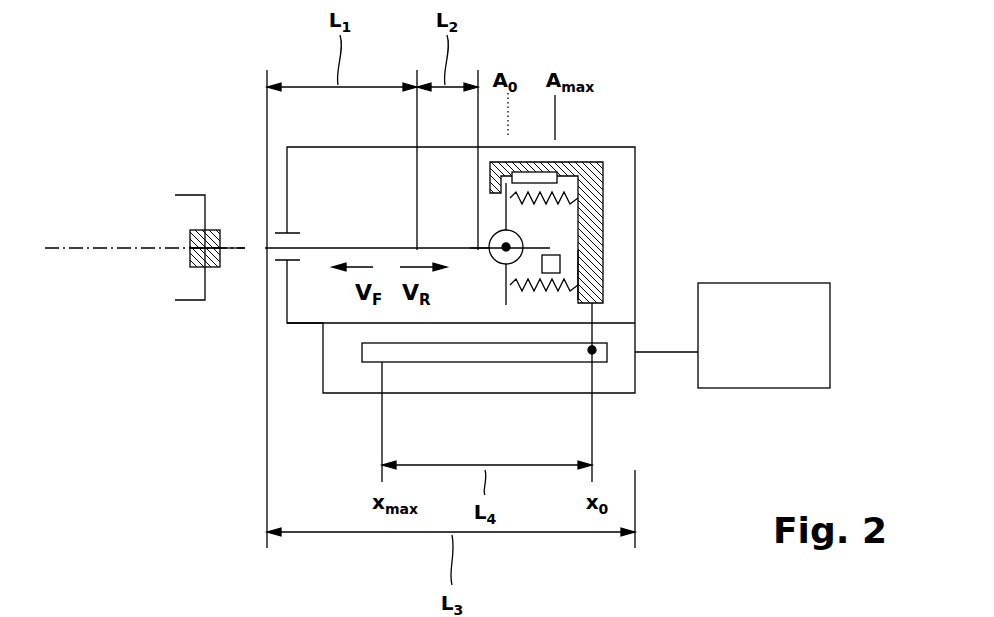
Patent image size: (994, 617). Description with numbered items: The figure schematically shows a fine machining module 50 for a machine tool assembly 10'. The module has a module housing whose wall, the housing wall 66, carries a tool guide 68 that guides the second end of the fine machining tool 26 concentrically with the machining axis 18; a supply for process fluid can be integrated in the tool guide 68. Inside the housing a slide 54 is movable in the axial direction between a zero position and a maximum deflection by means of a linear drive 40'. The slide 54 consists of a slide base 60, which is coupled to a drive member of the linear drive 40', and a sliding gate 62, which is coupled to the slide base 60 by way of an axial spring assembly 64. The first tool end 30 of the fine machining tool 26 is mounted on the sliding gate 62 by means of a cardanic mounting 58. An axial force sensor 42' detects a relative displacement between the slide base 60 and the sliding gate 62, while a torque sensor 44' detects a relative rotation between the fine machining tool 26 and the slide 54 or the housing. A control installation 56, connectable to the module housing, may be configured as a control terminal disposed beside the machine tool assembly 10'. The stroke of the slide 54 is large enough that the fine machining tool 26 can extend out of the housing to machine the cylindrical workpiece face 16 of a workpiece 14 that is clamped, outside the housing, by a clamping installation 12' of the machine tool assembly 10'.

The machine tool assembly 10' is at (72, 65).
The clamping installation 12' is at (193, 206).
The workpiece 14 is at (190, 255).
The cylindrical workpiece face 16 is at (229, 243).
The machining axis 18 is at (105, 246).
The fine machining tool 26 is at (355, 240).
The first tool end 30 is at (468, 268).
The linear drive 40' is at (539, 392).
The axial force sensor 42' is at (588, 139).
The torque sensor 44' is at (629, 244).
The fine machining module 50 is at (792, 128).
The slide 54 is at (616, 193).
The control installation 56 is at (775, 305).
The cardanic mounting 58 is at (492, 273).
The slide base 60 is at (592, 262).
The sliding gate 62 is at (505, 306).
The axial spring assembly 64 is at (549, 291).
The housing wall 66 is at (287, 322).
The tool guide 68 is at (280, 262).